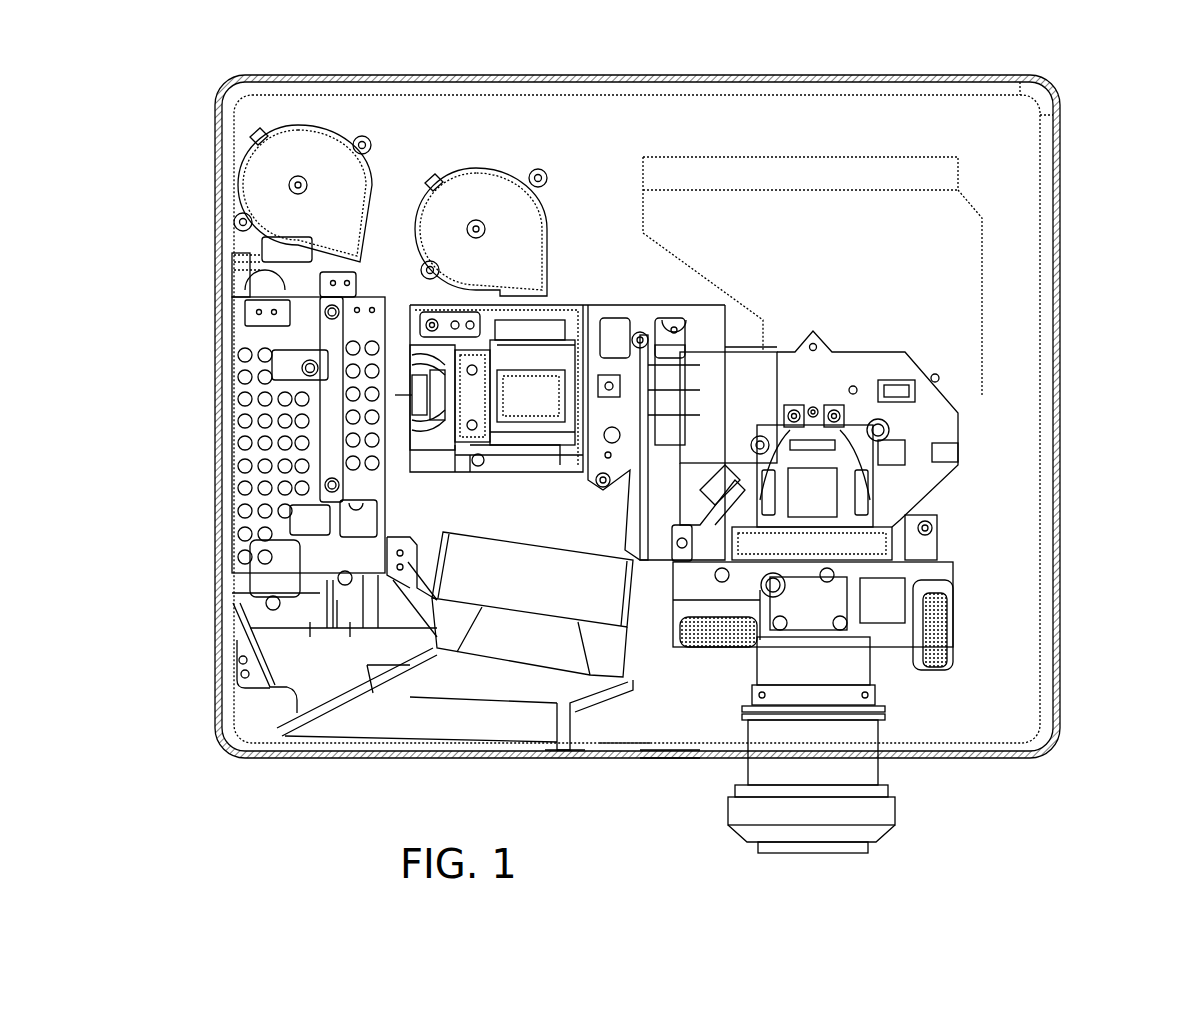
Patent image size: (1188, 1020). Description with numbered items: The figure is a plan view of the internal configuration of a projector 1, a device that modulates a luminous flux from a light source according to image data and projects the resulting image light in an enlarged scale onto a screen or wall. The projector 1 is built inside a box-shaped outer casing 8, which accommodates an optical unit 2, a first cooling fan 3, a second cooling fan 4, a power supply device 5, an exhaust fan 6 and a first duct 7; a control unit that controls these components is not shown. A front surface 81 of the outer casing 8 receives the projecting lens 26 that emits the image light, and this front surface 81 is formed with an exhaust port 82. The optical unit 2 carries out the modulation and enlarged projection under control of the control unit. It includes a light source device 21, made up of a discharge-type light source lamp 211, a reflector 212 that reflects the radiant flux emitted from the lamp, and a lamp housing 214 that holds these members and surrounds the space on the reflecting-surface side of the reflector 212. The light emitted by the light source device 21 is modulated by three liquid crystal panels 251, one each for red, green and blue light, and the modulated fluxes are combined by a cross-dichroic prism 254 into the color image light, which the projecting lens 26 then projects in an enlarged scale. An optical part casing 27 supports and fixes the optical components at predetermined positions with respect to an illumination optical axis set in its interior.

The projector 1 is at (1094, 105).
The optical unit 2 is at (866, 413).
The first cooling fan 3 is at (500, 171).
The second cooling fan 4 is at (342, 133).
The power supply device 5 is at (232, 341).
The exhaust fan 6 is at (457, 627).
The first duct 7 is at (595, 689).
The outer casing 8 is at (666, 760).
The front surface 81 is at (627, 762).
The exhaust port 82 is at (558, 760).
The light source device 21 is at (559, 388).
The projecting lens 26 is at (898, 813).
The optical part casing 27 is at (621, 306).
The light source lamp 211 is at (438, 428).
The reflector 212 is at (455, 450).
The lamp housing 214 is at (543, 433).
The liquid crystal panels 251 is at (828, 410).
The cross-dichroic prism 254 is at (815, 506).